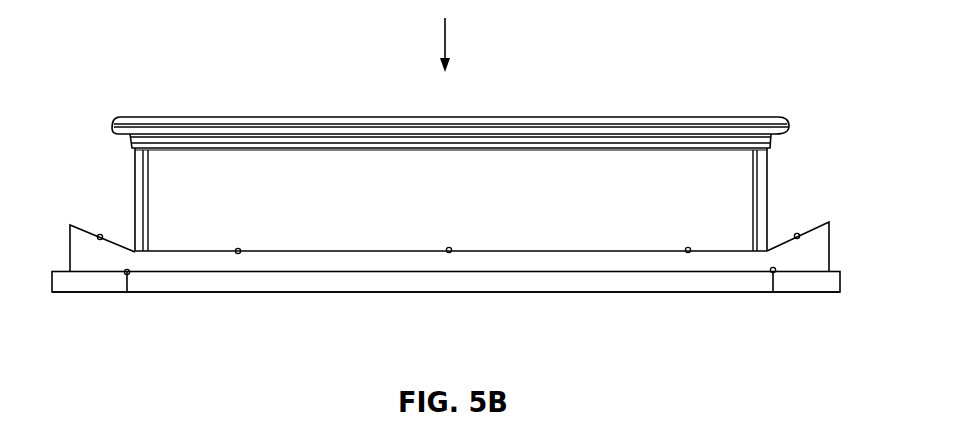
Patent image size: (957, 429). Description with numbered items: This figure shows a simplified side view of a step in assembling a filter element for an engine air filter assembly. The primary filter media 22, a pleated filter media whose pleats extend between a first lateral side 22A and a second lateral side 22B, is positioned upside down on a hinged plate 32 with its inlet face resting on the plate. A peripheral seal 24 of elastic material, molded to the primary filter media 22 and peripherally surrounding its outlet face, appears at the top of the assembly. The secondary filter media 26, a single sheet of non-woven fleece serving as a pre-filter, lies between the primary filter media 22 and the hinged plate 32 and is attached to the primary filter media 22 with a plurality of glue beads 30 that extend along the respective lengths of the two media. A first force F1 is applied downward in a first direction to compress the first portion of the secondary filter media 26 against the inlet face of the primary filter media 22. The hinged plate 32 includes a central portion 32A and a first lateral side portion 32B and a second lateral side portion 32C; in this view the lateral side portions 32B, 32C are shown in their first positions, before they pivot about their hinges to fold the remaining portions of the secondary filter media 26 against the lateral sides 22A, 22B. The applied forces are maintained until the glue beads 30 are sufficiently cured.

The primary filter media 22 is at (737, 180).
The first lateral side of the primary filter media 22A is at (135, 198).
The second lateral side of the primary filter media 22B is at (767, 197).
The peripheral seal 24 is at (770, 117).
The secondary filter media 26 is at (820, 255).
The glue beads 30 is at (238, 248).
The hinged plate 32 is at (277, 293).
The central portion of the hinged plate 32A is at (482, 285).
The first lateral side portion of the hinged plate 32B is at (83, 293).
The second lateral side portion of the hinged plate 32C is at (780, 292).
The first force F1 is at (447, 34).